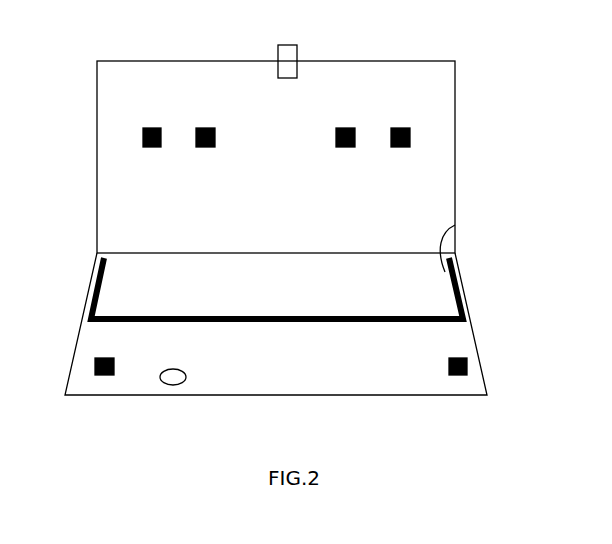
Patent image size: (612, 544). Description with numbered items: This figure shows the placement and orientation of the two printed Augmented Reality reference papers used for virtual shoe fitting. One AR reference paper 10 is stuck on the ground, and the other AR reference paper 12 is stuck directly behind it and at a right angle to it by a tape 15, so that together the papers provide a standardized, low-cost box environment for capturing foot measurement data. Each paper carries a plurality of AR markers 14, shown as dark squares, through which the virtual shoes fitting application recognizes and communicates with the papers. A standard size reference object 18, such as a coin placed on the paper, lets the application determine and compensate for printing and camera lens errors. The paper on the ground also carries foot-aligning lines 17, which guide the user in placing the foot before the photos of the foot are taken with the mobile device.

The AR reference paper 10 is at (330, 395).
The AR reference paper 12 is at (455, 163).
The AR markers 14 is at (203, 127).
The tape 15 is at (288, 44).
The foot-aligning lines 17 is at (453, 300).
The standard size reference object 18 is at (173, 395).